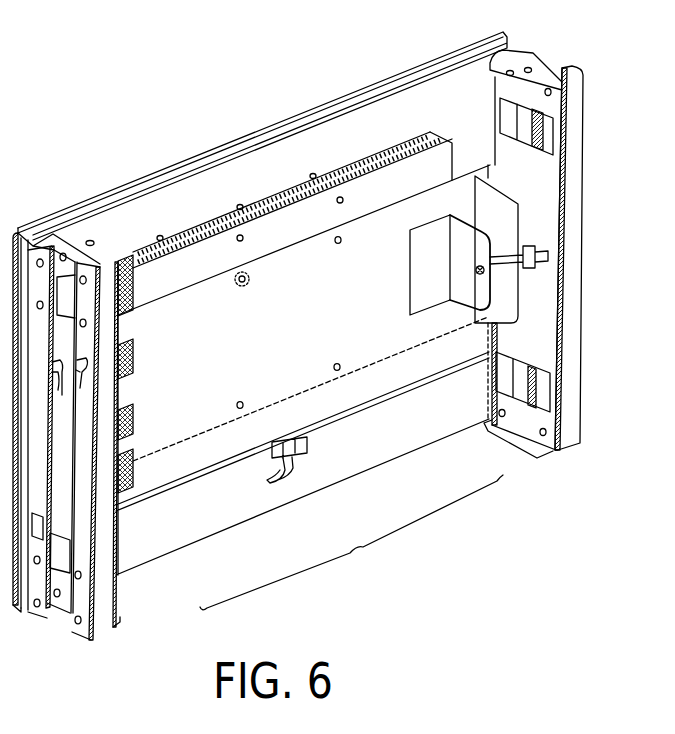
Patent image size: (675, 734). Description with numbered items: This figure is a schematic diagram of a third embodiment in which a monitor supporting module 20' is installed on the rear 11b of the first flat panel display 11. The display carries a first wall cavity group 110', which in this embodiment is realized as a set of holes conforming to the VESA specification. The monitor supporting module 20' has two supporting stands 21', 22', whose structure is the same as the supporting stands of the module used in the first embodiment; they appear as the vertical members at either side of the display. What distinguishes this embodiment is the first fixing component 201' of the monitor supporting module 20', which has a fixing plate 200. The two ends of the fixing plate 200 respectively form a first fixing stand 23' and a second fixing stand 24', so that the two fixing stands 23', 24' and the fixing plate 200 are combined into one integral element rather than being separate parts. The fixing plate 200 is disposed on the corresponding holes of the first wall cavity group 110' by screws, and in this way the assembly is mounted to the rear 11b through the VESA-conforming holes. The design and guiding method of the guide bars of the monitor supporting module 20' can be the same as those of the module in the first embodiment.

The first flat panel display 11 is at (380, 85).
The rear 11b is at (337, 137).
The first wall cavity group 110' is at (267, 180).
The monitor supporting module 20' is at (337, 327).
The supporting stand 21' is at (496, 236).
The supporting stand 22' is at (66, 398).
The first fixing stand 23' is at (479, 335).
The second fixing stand 24' is at (217, 515).
The fixing plate 200 is at (343, 330).
The first fixing component 201' is at (351, 542).